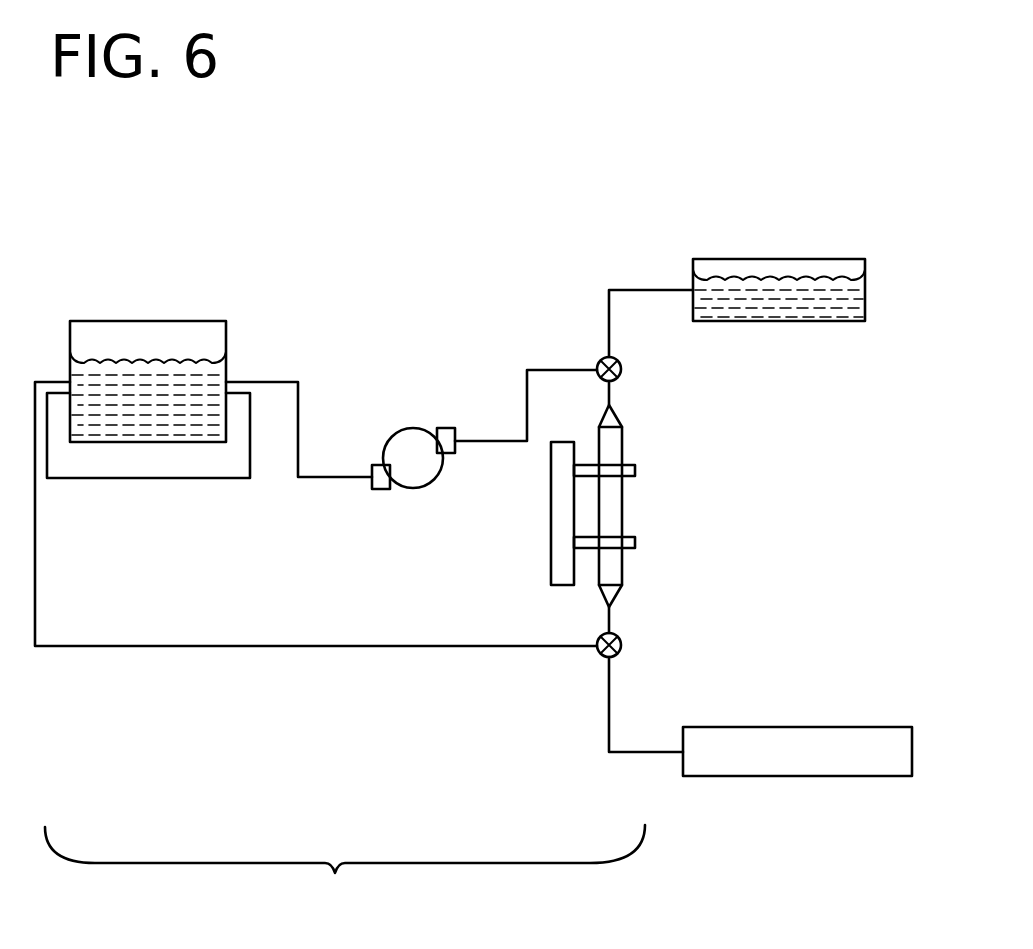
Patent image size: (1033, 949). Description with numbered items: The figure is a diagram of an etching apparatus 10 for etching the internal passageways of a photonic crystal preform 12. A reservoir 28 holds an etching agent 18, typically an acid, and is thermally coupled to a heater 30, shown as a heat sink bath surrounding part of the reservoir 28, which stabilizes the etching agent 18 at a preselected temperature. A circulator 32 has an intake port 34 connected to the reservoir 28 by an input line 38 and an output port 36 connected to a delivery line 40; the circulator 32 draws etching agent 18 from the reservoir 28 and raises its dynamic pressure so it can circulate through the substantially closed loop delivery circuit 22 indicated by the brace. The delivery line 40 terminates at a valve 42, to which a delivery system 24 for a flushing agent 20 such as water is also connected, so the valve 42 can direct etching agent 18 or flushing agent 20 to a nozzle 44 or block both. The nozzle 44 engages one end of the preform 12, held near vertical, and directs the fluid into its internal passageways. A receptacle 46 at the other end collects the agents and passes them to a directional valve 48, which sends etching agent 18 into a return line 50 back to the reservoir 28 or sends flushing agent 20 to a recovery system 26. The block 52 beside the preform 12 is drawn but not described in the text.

The etching apparatus 10 is at (513, 187).
The preform 12 is at (622, 515).
The etching agent 18 is at (214, 381).
The flushing agent 20 is at (857, 294).
The delivery circuit 22 is at (345, 865).
The flushing agent delivery system 24 is at (800, 321).
The flushing agent recovery system 26 is at (795, 727).
The reservoir 28 is at (122, 321).
The heater 30 is at (150, 478).
The circulator 32 is at (418, 489).
The intake port 34 is at (384, 489).
The output port 36 is at (443, 428).
The input line 38 is at (302, 390).
The delivery line 40 is at (535, 363).
The valve 42 is at (621, 372).
The nozzle 44 is at (621, 416).
The receptacle 46 is at (616, 598).
The directional valve 48 is at (621, 648).
The return line 50 is at (158, 646).
The detector/heating block 52 is at (551, 503).